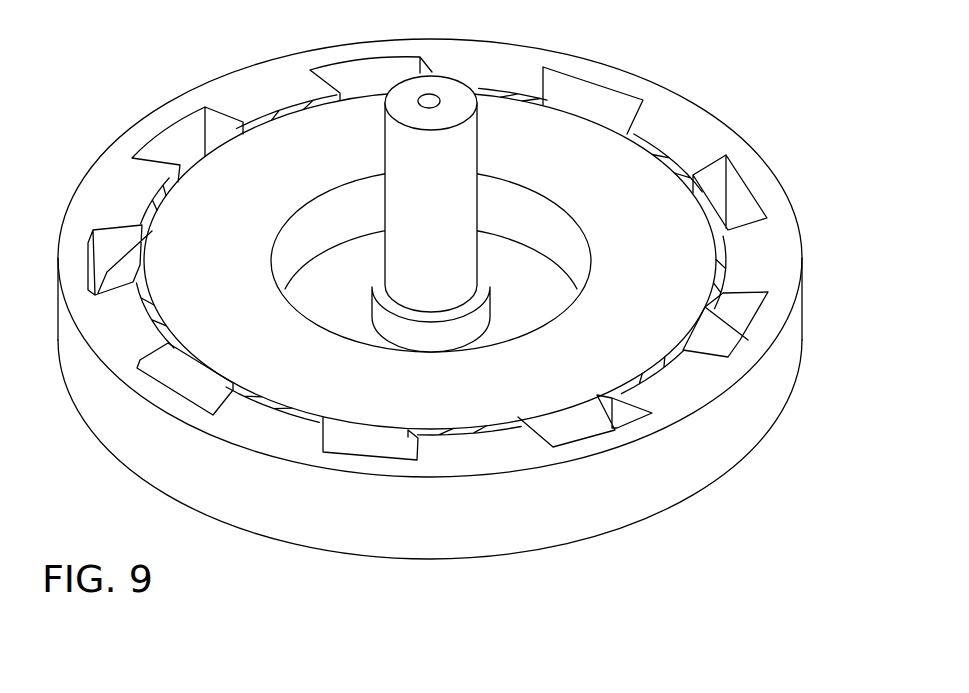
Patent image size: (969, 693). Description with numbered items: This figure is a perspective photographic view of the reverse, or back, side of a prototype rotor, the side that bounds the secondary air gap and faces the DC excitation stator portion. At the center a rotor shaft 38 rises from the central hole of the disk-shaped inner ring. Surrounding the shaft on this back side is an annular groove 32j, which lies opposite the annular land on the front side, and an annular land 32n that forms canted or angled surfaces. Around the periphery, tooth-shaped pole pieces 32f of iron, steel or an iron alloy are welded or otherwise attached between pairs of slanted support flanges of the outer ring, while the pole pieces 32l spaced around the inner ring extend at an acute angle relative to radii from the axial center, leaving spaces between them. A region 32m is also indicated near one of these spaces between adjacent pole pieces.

The rotor shaft 38 is at (458, 146).
The annular groove 32j is at (532, 252).
The slot between lugs 32m is at (276, 397).
The annular land 32n is at (480, 401).
The tooth-shaped pole pieces 32f is at (278, 430).
The pole pieces 32l is at (368, 442).